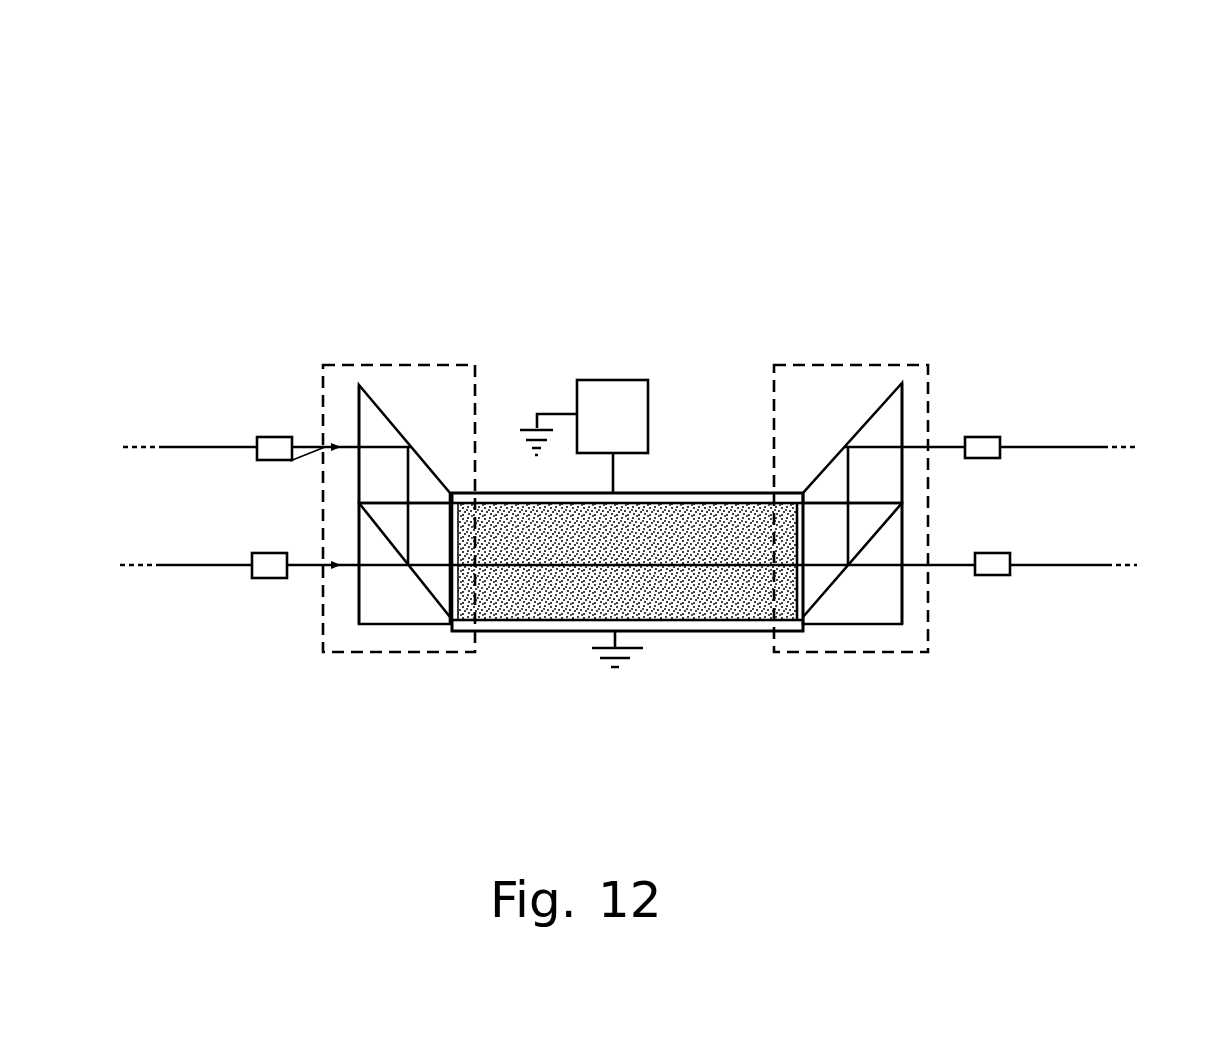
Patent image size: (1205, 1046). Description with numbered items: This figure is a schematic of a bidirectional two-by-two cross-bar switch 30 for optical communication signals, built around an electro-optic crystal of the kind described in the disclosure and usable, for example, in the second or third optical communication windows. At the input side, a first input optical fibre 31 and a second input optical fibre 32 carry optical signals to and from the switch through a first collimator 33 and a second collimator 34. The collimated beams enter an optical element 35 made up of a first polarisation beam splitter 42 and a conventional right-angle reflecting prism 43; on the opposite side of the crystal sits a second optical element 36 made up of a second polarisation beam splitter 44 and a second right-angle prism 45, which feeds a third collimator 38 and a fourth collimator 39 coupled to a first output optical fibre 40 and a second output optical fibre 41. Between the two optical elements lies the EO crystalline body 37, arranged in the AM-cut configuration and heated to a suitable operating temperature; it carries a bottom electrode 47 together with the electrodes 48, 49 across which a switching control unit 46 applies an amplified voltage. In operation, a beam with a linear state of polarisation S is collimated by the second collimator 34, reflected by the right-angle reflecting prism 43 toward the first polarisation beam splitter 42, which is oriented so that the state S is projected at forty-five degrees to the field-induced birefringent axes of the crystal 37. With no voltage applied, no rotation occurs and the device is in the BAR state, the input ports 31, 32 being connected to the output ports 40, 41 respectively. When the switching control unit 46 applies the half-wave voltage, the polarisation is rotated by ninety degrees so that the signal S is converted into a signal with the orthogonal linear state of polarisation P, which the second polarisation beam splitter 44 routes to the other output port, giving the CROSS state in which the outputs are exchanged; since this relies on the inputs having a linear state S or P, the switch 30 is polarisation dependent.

The bidirectional 2×2 cross-bar switch 30 is at (800, 185).
The first input optical fibre 31 is at (157, 565).
The second input optical fibre 32 is at (195, 447).
The first collimator 33 is at (263, 578).
The second collimator 34 is at (278, 437).
The optical element 35 is at (388, 365).
The second optical element 36 is at (865, 365).
The EO crystalline body 37 is at (707, 607).
The third collimator 38 is at (990, 575).
The fourth collimator 39 is at (993, 437).
The first output optical fibre 40 is at (1087, 565).
The second output optical fibre 41 is at (1095, 447).
The first polarisation beam splitter 42 is at (403, 623).
The right-angle reflecting prism 43 is at (393, 425).
The second polarisation beam splitter 44 is at (855, 625).
The second right-angle prism 45 is at (860, 430).
The switching control unit 46 is at (605, 380).
The bottom electrode 47 is at (527, 632).
The electrode 48 is at (695, 500).
The electrode 49 is at (770, 632).
The linear state of polarisation S is at (283, 461).
The linear state of polarisation P is at (318, 567).